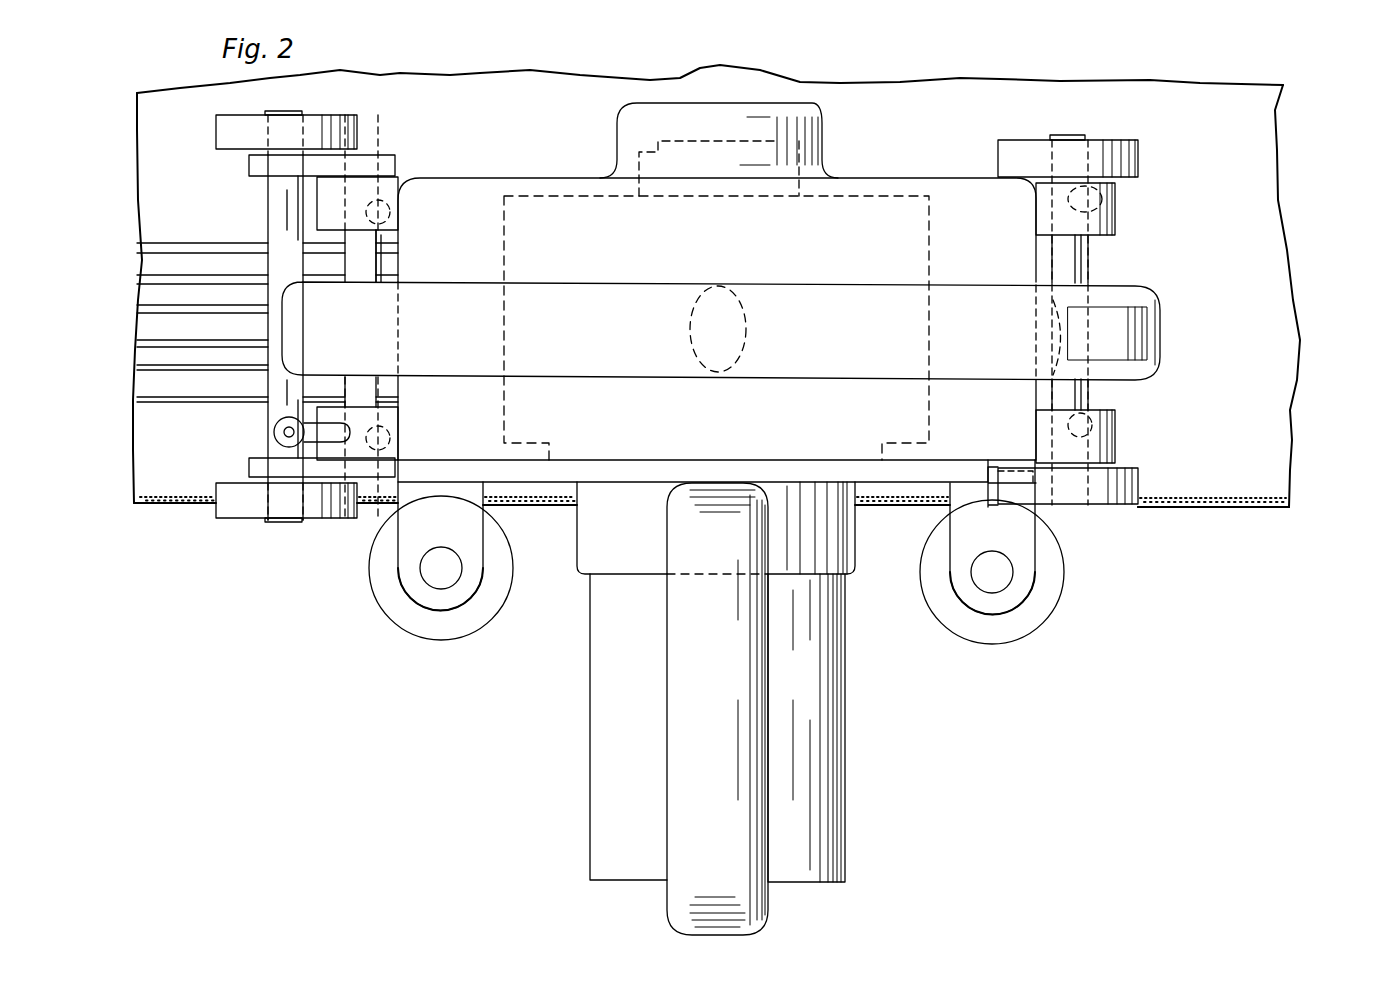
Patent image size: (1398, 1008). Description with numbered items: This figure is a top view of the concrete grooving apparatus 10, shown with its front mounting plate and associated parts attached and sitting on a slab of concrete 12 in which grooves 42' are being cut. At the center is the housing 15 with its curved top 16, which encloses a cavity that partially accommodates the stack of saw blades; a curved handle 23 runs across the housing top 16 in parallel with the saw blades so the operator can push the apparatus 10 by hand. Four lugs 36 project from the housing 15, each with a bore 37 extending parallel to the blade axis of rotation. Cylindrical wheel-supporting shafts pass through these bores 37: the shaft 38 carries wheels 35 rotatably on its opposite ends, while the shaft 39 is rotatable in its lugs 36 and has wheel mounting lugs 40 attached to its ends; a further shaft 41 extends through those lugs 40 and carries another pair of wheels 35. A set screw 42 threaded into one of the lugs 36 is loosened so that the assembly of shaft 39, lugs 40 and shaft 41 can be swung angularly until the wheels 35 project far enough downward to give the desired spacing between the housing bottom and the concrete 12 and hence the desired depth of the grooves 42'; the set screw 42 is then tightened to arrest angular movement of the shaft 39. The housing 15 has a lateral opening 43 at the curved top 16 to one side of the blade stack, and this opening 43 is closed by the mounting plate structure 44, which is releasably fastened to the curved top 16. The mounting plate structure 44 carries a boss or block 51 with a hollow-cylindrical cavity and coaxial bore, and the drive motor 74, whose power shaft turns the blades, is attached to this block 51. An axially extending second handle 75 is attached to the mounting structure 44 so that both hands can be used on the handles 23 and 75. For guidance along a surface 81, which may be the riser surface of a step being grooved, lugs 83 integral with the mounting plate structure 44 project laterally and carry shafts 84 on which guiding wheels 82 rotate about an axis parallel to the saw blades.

The apparatus 10 is at (905, 170).
The concrete 12 is at (1272, 444).
The housing 15 is at (493, 176).
The curved top 16 is at (545, 208).
The handle 23 is at (817, 280).
The wheels 35 is at (320, 118).
The lugs 36 is at (400, 183).
The bore 37 is at (392, 214).
The shaft 38 is at (1080, 270).
The shaft 39 is at (385, 272).
The lugs 40 is at (330, 158).
The shaft 41 is at (270, 202).
The set screw 42 is at (280, 434).
The grooves 42' is at (234, 322).
The lateral opening 43 is at (596, 462).
The mounting plate structure 44 is at (537, 503).
The boss 51 is at (580, 573).
The drive motor 74 is at (590, 778).
The second handle 75 is at (668, 895).
The surface 81 is at (1193, 507).
The guiding wheels 82 is at (476, 637).
The lugs 83 is at (396, 548).
The shafts 84 is at (430, 590).